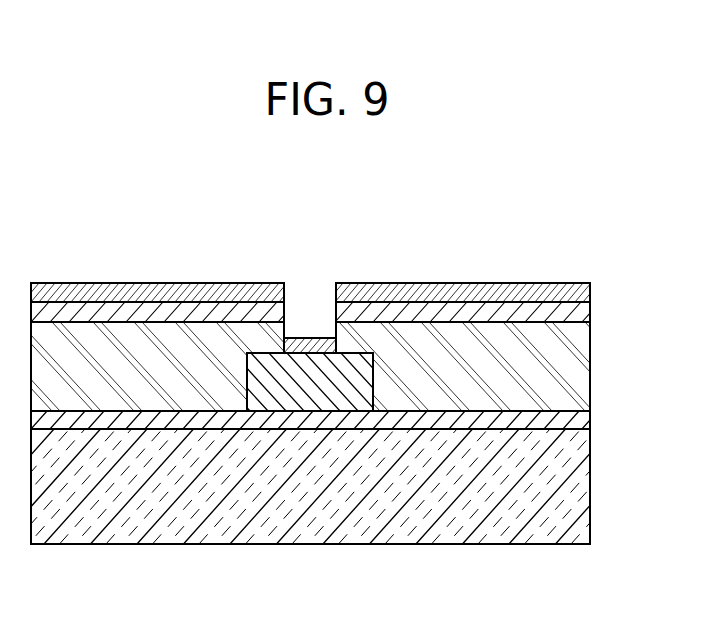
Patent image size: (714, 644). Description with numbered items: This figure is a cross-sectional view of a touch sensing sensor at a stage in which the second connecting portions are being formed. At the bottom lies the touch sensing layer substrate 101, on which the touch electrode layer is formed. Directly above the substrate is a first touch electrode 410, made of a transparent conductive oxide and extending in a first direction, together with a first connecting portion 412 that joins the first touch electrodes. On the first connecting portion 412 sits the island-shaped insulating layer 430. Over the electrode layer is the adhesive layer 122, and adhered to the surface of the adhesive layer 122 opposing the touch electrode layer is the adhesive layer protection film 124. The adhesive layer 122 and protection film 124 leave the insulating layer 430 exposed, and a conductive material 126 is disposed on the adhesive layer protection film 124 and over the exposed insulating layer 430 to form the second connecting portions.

The touch sensing layer substrate 101 is at (573, 485).
The adhesive layer 122 is at (573, 367).
The adhesive layer protection film 124 is at (573, 310).
The conductive material 126 is at (573, 292).
The first touch electrode 410 is at (570, 420).
The first connecting portion 412 is at (313, 431).
The insulating layer 430 is at (370, 365).